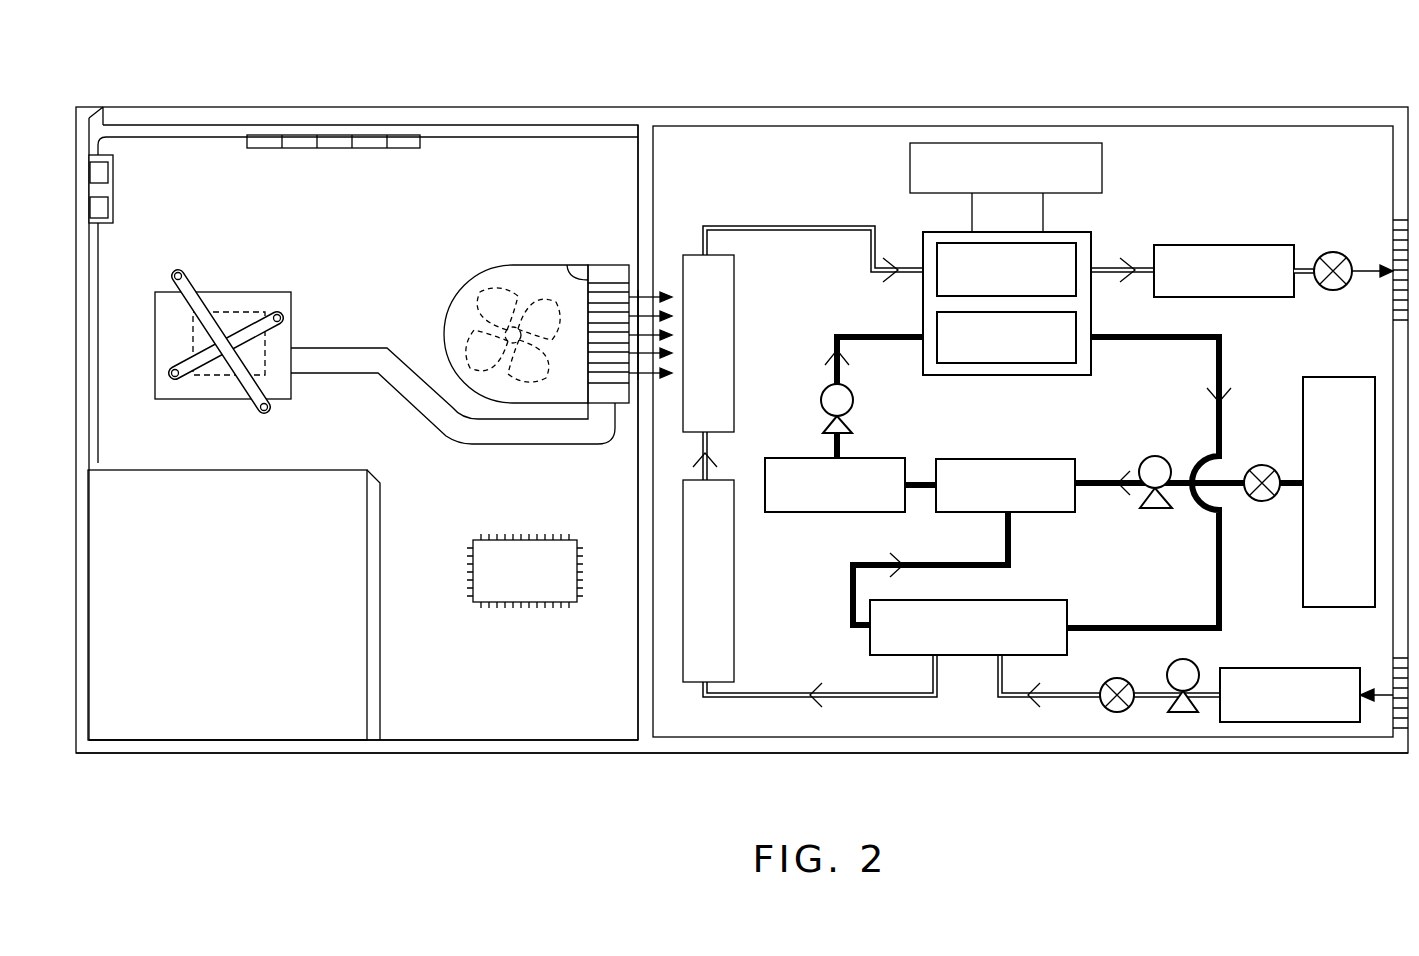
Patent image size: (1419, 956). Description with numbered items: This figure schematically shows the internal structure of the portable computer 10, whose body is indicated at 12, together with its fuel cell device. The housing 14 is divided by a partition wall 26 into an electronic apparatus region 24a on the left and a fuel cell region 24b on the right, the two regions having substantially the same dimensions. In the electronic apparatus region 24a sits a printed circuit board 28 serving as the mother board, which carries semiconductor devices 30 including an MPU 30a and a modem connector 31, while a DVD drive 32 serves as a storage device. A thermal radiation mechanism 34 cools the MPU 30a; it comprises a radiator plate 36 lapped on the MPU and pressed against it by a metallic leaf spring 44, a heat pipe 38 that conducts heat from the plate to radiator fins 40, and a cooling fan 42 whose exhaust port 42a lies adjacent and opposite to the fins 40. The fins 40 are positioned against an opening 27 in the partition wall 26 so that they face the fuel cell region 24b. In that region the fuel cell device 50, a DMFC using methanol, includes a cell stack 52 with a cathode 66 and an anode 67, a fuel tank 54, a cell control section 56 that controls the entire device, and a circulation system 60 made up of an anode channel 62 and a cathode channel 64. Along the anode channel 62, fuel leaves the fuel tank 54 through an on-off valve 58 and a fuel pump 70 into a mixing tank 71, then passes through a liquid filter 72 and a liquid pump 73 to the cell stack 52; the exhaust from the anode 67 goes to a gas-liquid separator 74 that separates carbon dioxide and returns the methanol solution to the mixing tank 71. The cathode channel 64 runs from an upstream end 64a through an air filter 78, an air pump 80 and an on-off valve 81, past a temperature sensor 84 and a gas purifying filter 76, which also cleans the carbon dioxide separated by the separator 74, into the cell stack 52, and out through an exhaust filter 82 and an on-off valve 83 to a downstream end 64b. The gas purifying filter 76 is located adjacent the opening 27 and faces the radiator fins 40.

The portable computer 10 is at (323, 86).
The housing 12 is at (123, 86).
The housing 14 is at (697, 755).
The electronic apparatus region 24a is at (500, 166).
The fuel cell region 24b is at (1194, 166).
The partition wall 26 is at (638, 707).
The opening 27 is at (646, 393).
The printed circuit board 28 is at (420, 742).
The semiconductor devices 30 is at (535, 602).
The MPU 30a is at (233, 311).
The modem connector 31 is at (115, 192).
The DVD drive 32 is at (258, 742).
The thermal radiation mechanism 34 is at (440, 460).
The radiator plate 36 is at (200, 400).
The heat pipe 38 is at (413, 392).
The radiator fins 40 is at (610, 275).
The cooling fan 42 is at (513, 265).
The exhaust port 42a is at (585, 280).
The metallic leaf spring 44 is at (193, 300).
The fuel cell device 50 is at (860, 166).
The cell stack 52 is at (1060, 376).
The fuel tank 54 is at (1302, 436).
The cell control section 56 is at (1102, 170).
The on-off valve 58 is at (1262, 502).
The circulation system 60 is at (1250, 358).
The anode channel 62 is at (840, 446).
The cathode channel 64 is at (771, 228).
The upstream end 64a is at (1388, 700).
The downstream end 64b is at (1368, 284).
The cathode 66 is at (932, 283).
The anode 67 is at (976, 375).
The fuel pump 70 is at (1155, 456).
The mixing tank 71 is at (1053, 512).
The liquid filter 72 is at (791, 512).
The liquid pump 73 is at (854, 400).
The gas-liquid separator 74 is at (964, 655).
The gas purifying filter 76 is at (735, 302).
The air filter 78 is at (1257, 722).
The air pump 80 is at (1184, 713).
The on-off valve 81 is at (1117, 713).
The exhaust filter 82 is at (1263, 245).
The on-off valve 83 is at (1333, 252).
The temperature sensor 84 is at (735, 617).